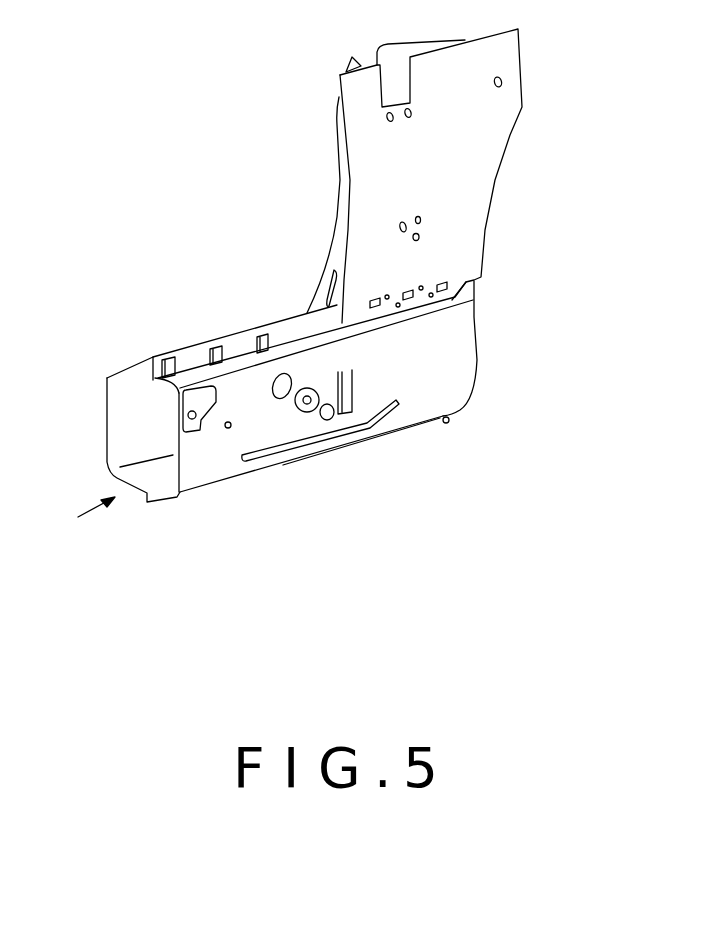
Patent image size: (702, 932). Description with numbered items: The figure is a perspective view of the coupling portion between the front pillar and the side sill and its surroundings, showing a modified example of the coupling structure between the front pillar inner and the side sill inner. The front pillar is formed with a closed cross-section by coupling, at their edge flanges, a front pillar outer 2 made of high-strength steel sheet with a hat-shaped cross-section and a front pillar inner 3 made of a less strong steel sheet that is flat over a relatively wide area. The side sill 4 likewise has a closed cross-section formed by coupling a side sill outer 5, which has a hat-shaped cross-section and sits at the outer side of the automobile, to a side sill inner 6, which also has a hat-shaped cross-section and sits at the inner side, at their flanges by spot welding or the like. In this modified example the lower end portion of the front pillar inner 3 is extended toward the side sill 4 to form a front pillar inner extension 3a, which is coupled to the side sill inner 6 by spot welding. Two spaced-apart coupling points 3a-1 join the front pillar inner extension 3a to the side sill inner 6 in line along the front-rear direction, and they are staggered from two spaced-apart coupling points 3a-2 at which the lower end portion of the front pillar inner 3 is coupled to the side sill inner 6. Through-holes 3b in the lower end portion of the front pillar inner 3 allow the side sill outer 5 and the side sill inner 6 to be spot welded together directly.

The front pillar outer 2 is at (338, 220).
The front pillar inner 3 is at (485, 155).
The front pillar inner extension 3a is at (458, 288).
The coupling points 3a-1 is at (431, 297).
The coupling points 3a-2 is at (421, 288).
The through-holes 3b is at (376, 307).
The side sill 4 is at (85, 520).
The side sill outer 5 is at (104, 428).
The side sill inner 6 is at (217, 473).